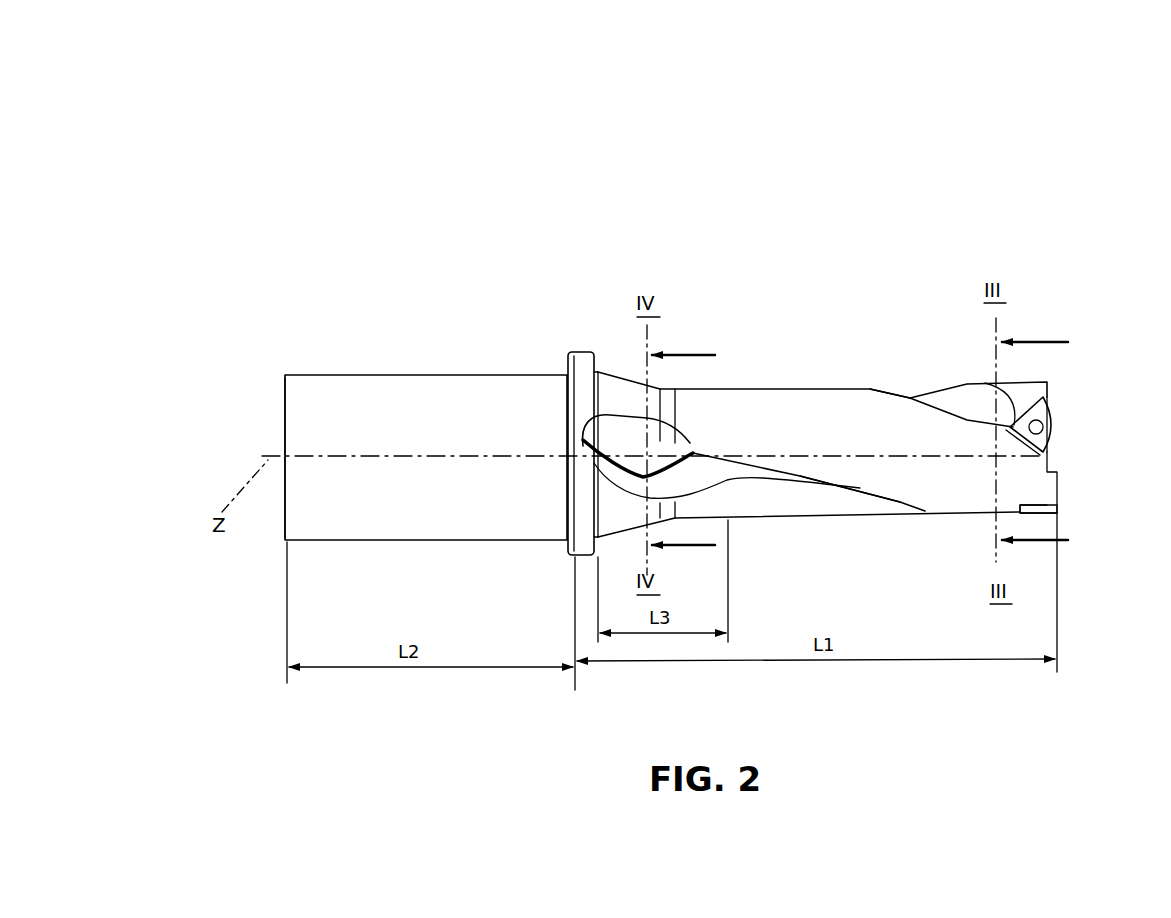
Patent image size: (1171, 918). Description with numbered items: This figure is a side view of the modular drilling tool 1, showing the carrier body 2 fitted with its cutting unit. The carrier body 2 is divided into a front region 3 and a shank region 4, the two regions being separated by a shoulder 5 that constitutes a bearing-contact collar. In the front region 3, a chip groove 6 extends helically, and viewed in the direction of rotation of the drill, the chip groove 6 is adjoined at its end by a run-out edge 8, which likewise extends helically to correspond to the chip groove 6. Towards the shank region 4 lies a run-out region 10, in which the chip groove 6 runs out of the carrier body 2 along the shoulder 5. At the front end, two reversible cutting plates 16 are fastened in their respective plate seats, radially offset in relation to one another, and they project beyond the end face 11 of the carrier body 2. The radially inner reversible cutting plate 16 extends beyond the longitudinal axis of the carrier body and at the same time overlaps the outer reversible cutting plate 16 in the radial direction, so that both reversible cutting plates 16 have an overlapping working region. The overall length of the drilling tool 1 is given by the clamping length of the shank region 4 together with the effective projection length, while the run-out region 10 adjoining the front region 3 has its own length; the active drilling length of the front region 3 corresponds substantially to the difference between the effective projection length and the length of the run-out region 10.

The modular drilling tool 1 is at (313, 231).
The carrier body 2 is at (285, 430).
The front region 3 is at (826, 378).
The shank region 4 is at (382, 374).
The shoulder 5 is at (581, 353).
The chip groove 6 is at (965, 380).
The run-out edge 8 is at (927, 378).
The run-out region 10 is at (690, 440).
The end face 11 is at (1049, 466).
The reversible cutting plate 16 is at (1048, 420).